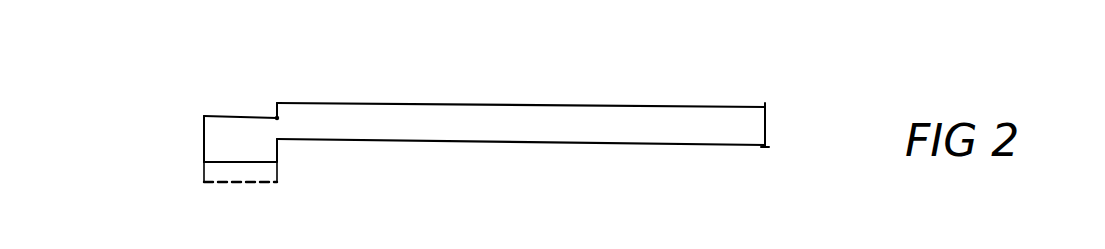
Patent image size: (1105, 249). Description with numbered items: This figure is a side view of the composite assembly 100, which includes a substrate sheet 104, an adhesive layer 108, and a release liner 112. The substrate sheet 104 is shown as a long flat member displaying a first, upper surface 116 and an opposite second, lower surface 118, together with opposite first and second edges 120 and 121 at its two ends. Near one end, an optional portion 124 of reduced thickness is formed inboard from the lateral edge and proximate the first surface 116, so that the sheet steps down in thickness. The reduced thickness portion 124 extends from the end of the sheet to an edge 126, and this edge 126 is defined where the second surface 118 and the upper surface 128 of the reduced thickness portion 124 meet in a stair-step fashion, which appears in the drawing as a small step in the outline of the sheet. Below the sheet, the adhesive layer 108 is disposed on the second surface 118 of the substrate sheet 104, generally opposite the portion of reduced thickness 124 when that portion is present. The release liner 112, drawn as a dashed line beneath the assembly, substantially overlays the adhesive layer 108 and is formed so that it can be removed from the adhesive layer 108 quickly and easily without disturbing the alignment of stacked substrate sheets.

The composite assembly 100 is at (813, 88).
The substrate sheet 104 is at (767, 148).
The adhesive layer 108 is at (278, 153).
The release liner 112 is at (278, 180).
The first surface 116 is at (590, 103).
The second surface 118 is at (650, 178).
The first edge 120 is at (767, 110).
The second edge 121 is at (201, 118).
The reduced thickness portion 124 is at (215, 112).
The edge 126 is at (275, 103).
The upper surface 128 is at (237, 112).